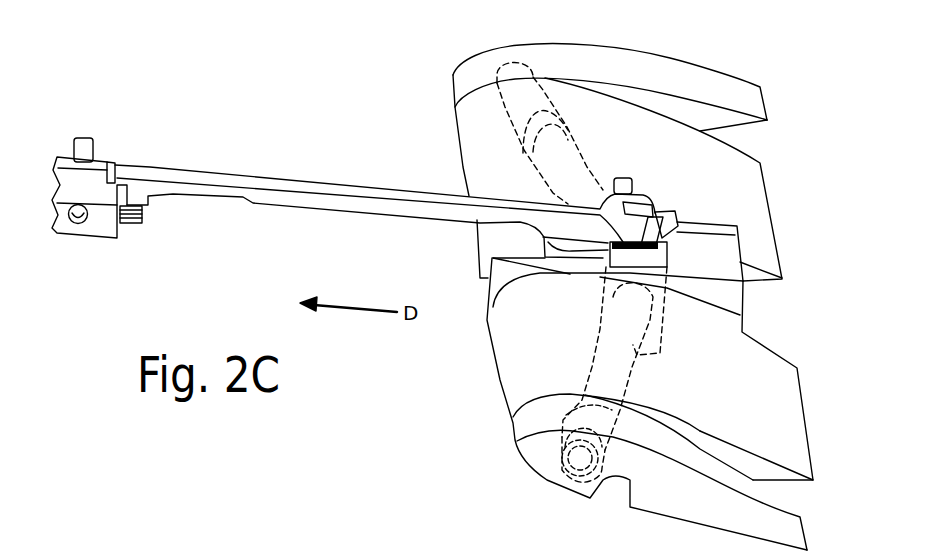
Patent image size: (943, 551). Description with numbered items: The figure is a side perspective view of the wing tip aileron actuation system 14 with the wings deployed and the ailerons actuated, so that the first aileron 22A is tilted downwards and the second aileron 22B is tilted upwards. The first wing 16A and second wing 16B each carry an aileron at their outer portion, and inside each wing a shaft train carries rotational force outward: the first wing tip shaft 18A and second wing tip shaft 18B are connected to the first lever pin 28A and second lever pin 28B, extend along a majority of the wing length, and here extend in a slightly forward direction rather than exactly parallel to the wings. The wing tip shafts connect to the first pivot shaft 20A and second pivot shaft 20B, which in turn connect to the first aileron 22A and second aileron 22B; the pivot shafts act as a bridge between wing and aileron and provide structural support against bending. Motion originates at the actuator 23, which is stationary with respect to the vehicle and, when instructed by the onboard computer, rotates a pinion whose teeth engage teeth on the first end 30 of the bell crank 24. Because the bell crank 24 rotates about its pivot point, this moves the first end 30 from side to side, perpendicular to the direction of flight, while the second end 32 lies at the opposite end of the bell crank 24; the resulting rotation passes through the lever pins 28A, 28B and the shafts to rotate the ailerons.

The wing tip aileron actuation system 14 is at (307, 127).
The first wing 16A is at (530, 339).
The second wing 16B is at (738, 198).
The first wing tip shaft 18A is at (603, 377).
The second wing tip shaft 18B is at (553, 158).
The first pivot shaft 20A is at (563, 413).
The second pivot shaft 20B is at (513, 107).
The first aileron 22A is at (727, 477).
The second aileron 22B is at (723, 90).
The actuator 23 is at (98, 160).
The bell crank 24 is at (260, 179).
The first lever pin 28A is at (680, 241).
The second lever pin 28B is at (623, 177).
The first end 30 is at (151, 208).
The second end 32 is at (672, 214).